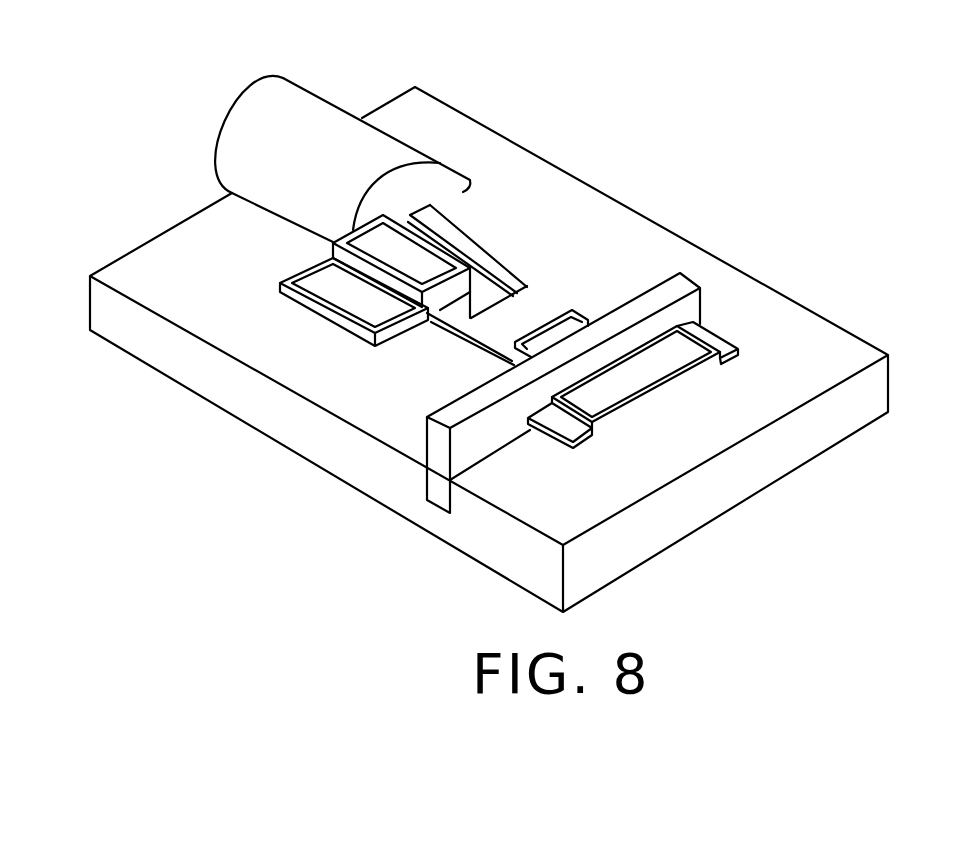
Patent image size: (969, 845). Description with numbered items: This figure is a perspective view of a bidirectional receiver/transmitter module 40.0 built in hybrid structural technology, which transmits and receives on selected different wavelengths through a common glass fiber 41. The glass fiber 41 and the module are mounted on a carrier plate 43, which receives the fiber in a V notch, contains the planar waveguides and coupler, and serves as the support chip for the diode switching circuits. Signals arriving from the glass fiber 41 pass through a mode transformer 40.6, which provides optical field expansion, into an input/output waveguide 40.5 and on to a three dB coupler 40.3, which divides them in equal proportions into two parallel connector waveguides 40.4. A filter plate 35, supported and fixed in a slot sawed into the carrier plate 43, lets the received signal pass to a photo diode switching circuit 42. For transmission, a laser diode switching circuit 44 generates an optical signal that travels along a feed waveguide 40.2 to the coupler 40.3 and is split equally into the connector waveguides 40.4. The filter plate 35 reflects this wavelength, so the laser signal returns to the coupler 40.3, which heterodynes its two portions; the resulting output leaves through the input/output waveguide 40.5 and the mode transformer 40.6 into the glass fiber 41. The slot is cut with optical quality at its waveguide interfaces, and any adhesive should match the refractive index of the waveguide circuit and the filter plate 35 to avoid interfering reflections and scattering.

The filter plate 35 is at (682, 286).
The bidirectional receiver/transmitter module 40.0 is at (485, 202).
The feed waveguide 40.2 is at (443, 315).
The 3 dB coupler 40.3 is at (502, 323).
The connector waveguides 40.4 is at (592, 312).
The input/output waveguide 40.5 is at (533, 277).
The mode transformer 40.6 is at (475, 242).
The glass fiber 41 is at (338, 108).
The photo diode switching circuit 42 is at (710, 330).
The carrier plate 43 is at (762, 463).
The laser diode switching circuit 44 is at (345, 322).